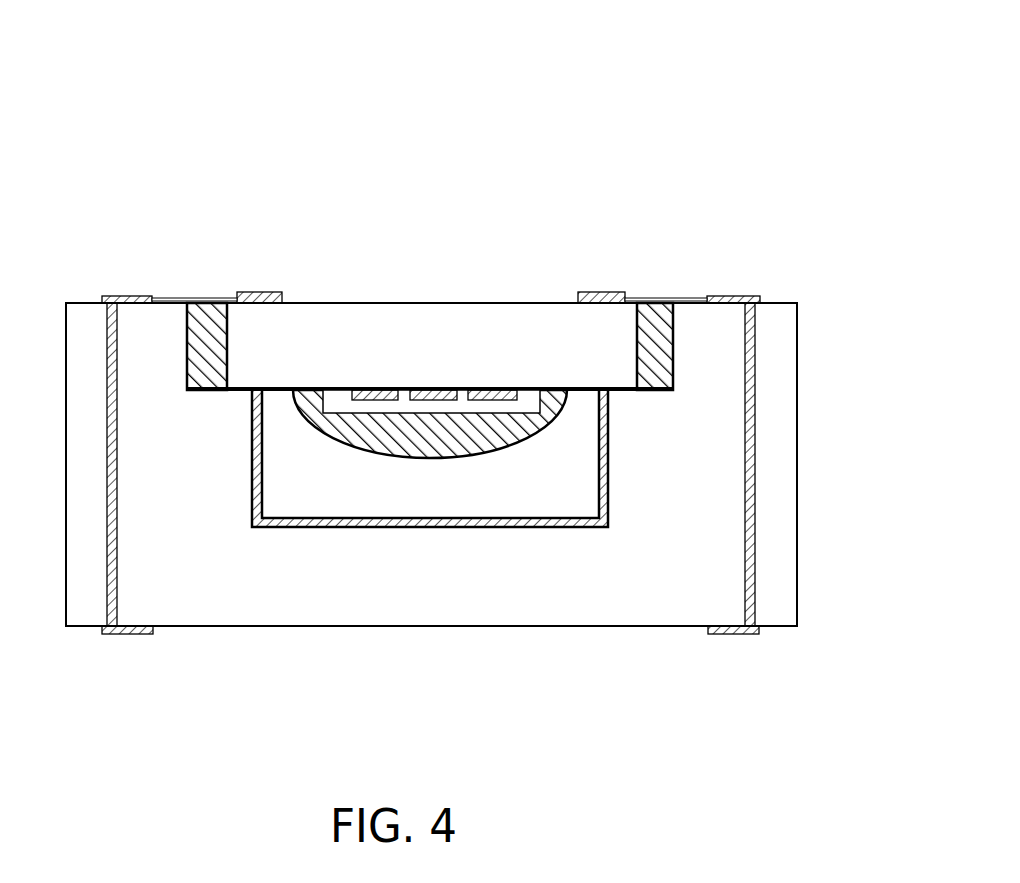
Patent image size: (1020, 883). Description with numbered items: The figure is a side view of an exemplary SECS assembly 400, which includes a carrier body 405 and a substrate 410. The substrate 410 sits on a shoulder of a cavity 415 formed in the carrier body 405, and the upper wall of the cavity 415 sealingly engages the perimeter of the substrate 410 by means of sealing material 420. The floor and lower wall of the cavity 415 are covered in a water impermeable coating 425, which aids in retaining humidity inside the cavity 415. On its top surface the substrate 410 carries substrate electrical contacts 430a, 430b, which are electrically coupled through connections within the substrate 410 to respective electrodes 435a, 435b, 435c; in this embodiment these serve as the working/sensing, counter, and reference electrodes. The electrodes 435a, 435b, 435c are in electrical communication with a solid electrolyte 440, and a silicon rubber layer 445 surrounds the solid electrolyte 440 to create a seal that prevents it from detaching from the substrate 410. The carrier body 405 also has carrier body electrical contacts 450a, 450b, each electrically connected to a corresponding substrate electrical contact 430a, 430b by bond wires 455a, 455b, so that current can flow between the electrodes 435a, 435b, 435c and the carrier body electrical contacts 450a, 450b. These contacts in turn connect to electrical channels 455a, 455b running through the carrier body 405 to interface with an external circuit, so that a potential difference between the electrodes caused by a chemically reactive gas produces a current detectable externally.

The SECS assembly 400 is at (262, 108).
The carrier body 405 is at (252, 627).
The substrate 410 is at (490, 303).
The cavity 415 is at (442, 506).
The sealing material 420 is at (228, 370).
The water impermeable coating 425 is at (263, 491).
The substrate electrical contact 430a is at (272, 292).
The substrate electrical contact 430b is at (605, 292).
The electrode 435a is at (385, 390).
The electrode 435b is at (430, 390).
The electrode 435c is at (485, 390).
The solid electrolyte 440 is at (548, 418).
The silicon rubber layer 445 is at (480, 458).
The carrier body electrical contact 450a is at (112, 296).
The carrier body electrical contact 450b is at (755, 296).
The bond wire / electrical channel 455a is at (200, 299).
The bond wire / electrical channel 455b is at (675, 299).